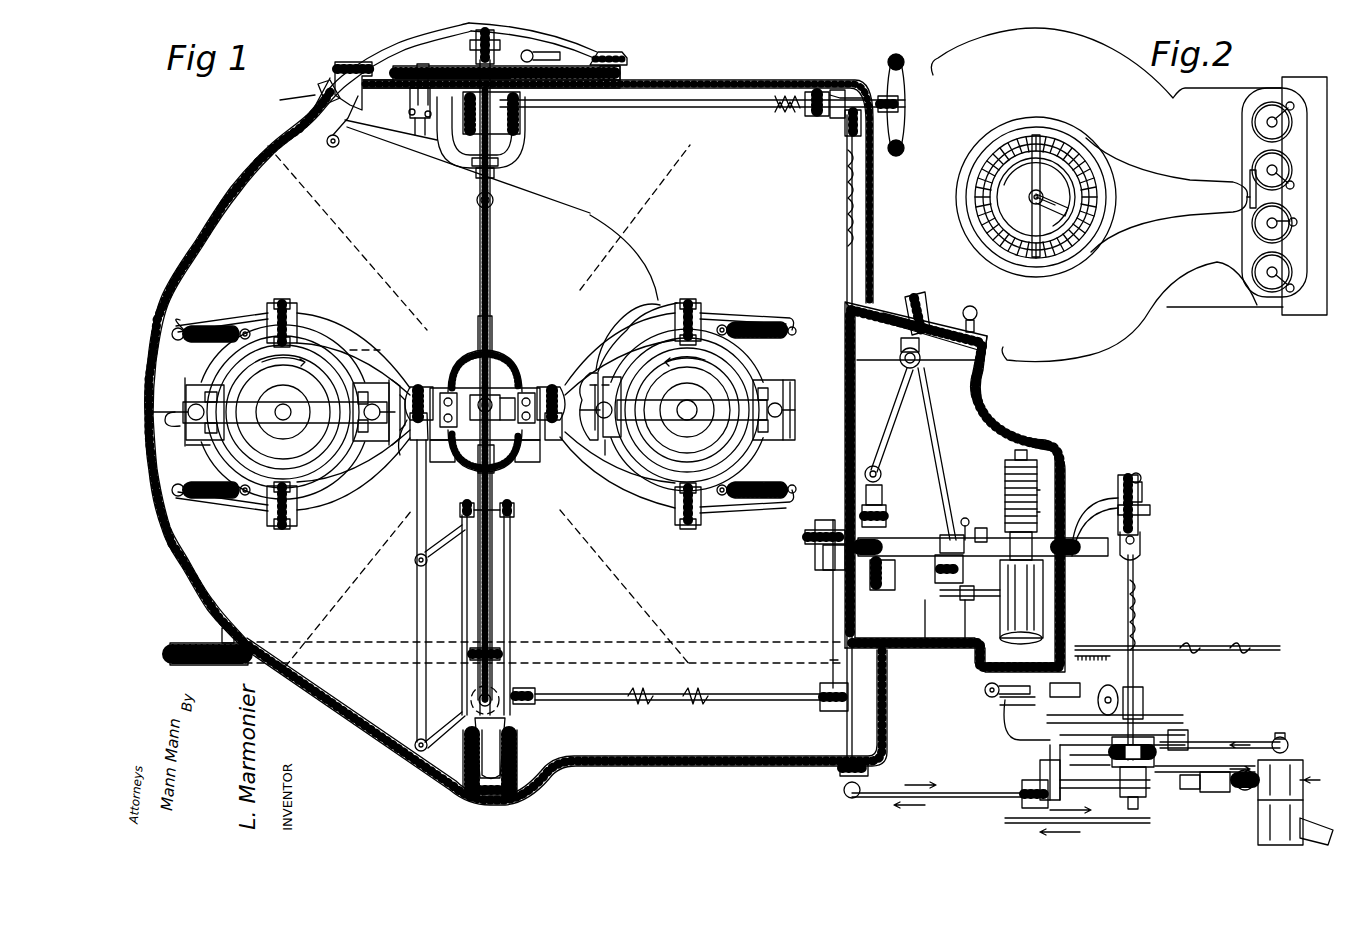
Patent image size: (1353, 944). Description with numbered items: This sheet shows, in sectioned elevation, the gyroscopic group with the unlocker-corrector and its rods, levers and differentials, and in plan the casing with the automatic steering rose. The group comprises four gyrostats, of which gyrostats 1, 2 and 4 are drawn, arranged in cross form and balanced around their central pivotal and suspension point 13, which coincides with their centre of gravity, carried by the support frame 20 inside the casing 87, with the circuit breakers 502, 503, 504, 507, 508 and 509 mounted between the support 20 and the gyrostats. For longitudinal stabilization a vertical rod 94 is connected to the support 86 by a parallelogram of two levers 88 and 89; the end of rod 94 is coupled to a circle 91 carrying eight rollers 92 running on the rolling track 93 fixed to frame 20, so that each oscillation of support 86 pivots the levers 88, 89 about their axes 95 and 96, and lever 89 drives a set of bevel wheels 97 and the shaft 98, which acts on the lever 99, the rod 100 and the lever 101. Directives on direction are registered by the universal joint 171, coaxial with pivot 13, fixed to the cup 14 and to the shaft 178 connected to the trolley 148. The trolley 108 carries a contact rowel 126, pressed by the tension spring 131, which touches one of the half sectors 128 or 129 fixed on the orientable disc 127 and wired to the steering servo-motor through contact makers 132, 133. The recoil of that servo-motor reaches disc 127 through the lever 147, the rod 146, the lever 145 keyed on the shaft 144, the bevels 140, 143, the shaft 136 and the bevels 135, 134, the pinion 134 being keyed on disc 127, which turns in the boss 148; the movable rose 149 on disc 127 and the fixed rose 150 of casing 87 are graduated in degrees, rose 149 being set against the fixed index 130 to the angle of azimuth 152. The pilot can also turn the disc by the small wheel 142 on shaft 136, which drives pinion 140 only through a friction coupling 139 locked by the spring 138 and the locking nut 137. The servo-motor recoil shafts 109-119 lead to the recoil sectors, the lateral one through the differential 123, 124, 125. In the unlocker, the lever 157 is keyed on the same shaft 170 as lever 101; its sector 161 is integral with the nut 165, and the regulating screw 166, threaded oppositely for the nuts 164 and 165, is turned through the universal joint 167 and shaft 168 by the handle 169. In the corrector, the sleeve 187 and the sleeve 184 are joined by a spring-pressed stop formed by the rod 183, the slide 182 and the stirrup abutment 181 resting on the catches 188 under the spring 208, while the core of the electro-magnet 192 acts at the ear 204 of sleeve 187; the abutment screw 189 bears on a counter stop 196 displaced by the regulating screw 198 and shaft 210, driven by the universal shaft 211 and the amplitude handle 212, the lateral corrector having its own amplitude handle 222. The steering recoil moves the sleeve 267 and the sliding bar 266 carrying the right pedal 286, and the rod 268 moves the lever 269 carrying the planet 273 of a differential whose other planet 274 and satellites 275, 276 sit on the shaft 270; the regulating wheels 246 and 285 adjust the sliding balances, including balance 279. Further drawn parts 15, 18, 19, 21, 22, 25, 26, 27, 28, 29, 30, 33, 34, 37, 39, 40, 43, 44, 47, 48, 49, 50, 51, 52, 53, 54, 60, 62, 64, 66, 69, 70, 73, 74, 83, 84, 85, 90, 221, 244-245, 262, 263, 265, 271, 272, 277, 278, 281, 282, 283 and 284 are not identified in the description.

In FIG. 1, the left dial 1 is at (300, 395).
In FIG. 1, the right dial 2 is at (710, 390).
In FIG. 1, the spindle 4 is at (477, 330).
In FIG. 1, the coupling 13 is at (502, 395).
In FIG. 1, the lower spindle 14 is at (496, 470).
In FIG. 1, the bevel gear 15 is at (452, 352).
In FIG. 1, the collar 18 is at (518, 398).
In FIG. 1, the hub housing 19 is at (440, 388).
In FIG. 1, the bearing block 20 is at (418, 387).
In FIG. 1, the housing curve 21 is at (366, 361).
In FIG. 1, the casing curve 22 is at (590, 385).
In FIG. 1, the clamp 25 is at (288, 300).
In FIG. 1, the clamp 26 is at (275, 526).
In FIG. 1, the clamp 27 is at (698, 306).
In FIG. 1, the clamp 28 is at (690, 522).
In FIG. 1, the shaft 29 is at (490, 305).
In FIG. 1, the sleeve 30 is at (460, 512).
In FIG. 1, the dial rim 33 is at (225, 370).
In FIG. 1, the dial rim 34 is at (672, 310).
In FIG. 1, the side plate 37 is at (186, 398).
In FIG. 1, the plate 39 is at (590, 440).
In FIG. 1, the flange 40 is at (795, 420).
In FIG. 1, the arm 43 is at (272, 412).
In FIG. 1, the arm 44 is at (687, 409).
In FIG. 1, the spring loop 47 is at (190, 326).
In FIG. 1, the rod 48 is at (236, 315).
In FIG. 1, the spring loop 49 is at (190, 498).
In FIG. 1, the rod 50 is at (235, 508).
In FIG. 1, the spring 51 is at (755, 320).
In FIG. 1, the rod 52 is at (782, 316).
In FIG. 1, the spring 53 is at (745, 500).
In FIG. 1, the rod 54 is at (775, 504).
In FIG. 1, the plate 60 is at (190, 443).
In FIG. 1, the side plate 62 is at (375, 386).
In FIG. 1, the link 64 is at (170, 423).
In FIG. 1, the flange 66 is at (395, 392).
In FIG. 1, the pin 69 is at (608, 460).
In FIG. 1, the side plate 70 is at (766, 386).
In FIG. 1, the plate 73 is at (600, 440).
In FIG. 1, the flange 74 is at (790, 395).
In FIG. 1, the central shaft 83 is at (478, 450).
In FIG. 1, the sleeve 84 is at (514, 510).
In FIG. 1, the nut 85 is at (500, 654).
In FIG. 1, the tube 86 is at (510, 565).
In FIG. 1, the housing 87 is at (165, 262).
In FIG. 1, the link 88 is at (443, 553).
In FIG. 1, the link 89 is at (440, 735).
In FIG. 1, the lever 90 is at (402, 455).
In FIG. 1, the bevel gear 91 is at (455, 462).
In FIG. 1, the bearing 92 is at (440, 455).
In FIG. 1, the ball bearing 93 is at (446, 392).
In FIG. 1, the bar 94 is at (414, 445).
In FIG. 1, the rod 95 is at (492, 538).
In FIG. 1, the pulley 96 is at (480, 697).
In FIG. 1, the fitting 97 is at (524, 688).
In FIG. 1, the spring rod 98 is at (640, 702).
In FIG. 1, the fitting 99 is at (830, 711).
In FIG. 1, the rod 100 is at (832, 600).
In FIG. 1, the fitting 101 is at (832, 570).
In FIG. 2, the needle 108 is at (1048, 262).
In FIG. 1, the rod 109-119 is at (1222, 646).
In FIG. 1, the valve 123 is at (1130, 475).
In FIG. 1, the nut 124 is at (1150, 510).
In FIG. 1, the valve stem 125 is at (1110, 500).
In FIG. 1, the bracket 126 is at (602, 52).
In FIG. 2, the bracket 126 is at (1068, 212).
In FIG. 1, the plate 127 is at (455, 68).
In FIG. 2, the plate 127 is at (1000, 274).
In FIG. 1, the block 128 is at (600, 70).
In FIG. 2, the block 128 is at (1018, 135).
In FIG. 1, the bolt 129 is at (414, 76).
In FIG. 2, the bolt 129 is at (990, 240).
In FIG. 1, the hinge 130 is at (372, 62).
In FIG. 2, the hinge 130 is at (972, 210).
In FIG. 1, the tube 131 is at (495, 55).
In FIG. 1, the handle 132 is at (410, 113).
In FIG. 1, the lever 133 is at (400, 120).
In FIG. 1, the bracket 134 is at (512, 135).
In FIG. 1, the gear 135 is at (522, 115).
In FIG. 1, the shaft 136 is at (672, 108).
In FIG. 1, the spring 137 is at (780, 112).
In FIG. 1, the nut 138 is at (812, 116).
In FIG. 1, the bushing 139 is at (828, 118).
In FIG. 1, the pipe 140 is at (850, 80).
In FIG. 1, the hand wheel 142 is at (906, 100).
In FIG. 2, the hand wheel 142 is at (1248, 208).
In FIG. 1, the fitting 143 is at (848, 136).
In FIG. 1, the shaft 144 is at (845, 212).
In FIG. 1, the nut 145 is at (868, 770).
In FIG. 1, the pipe 146 is at (905, 800).
In FIG. 1, the fitting 147 is at (1000, 800).
In FIG. 1, the bolt 148 is at (530, 56).
In FIG. 2, the scale 149 is at (1062, 140).
In FIG. 2, the pointer 150 is at (1080, 150).
In FIG. 2, the pointer 152 is at (1090, 218).
In FIG. 1, the block 157 is at (940, 583).
In FIG. 1, the rod 161 is at (940, 594).
In FIG. 1, the block 164 is at (886, 516).
In FIG. 1, the block 165 is at (878, 590).
In FIG. 1, the block 166 is at (882, 495).
In FIG. 1, the pivot 167 is at (881, 473).
In FIG. 1, the lever 168 is at (888, 435).
In FIG. 1, the lever 169 is at (978, 318).
In FIG. 2, the lever 169 is at (1294, 290).
In FIG. 1, the pivot 170 is at (916, 348).
In FIG. 1, the joint 171 is at (492, 398).
In FIG. 1, the collar 178 is at (470, 165).
In FIG. 1, the spring 181 is at (1038, 511).
In FIG. 1, the spring 182 is at (1040, 491).
In FIG. 1, the spring stack 183 is at (1005, 465).
In FIG. 1, the pipe 184 is at (1020, 540).
In FIG. 1, the stem 187 is at (980, 528).
In FIG. 1, the cylinder 188 is at (1010, 535).
In FIG. 1, the pin 189 is at (965, 518).
In FIG. 1, the fitting 192 is at (950, 553).
In FIG. 1, the rod 196 is at (925, 640).
In FIG. 1, the rod 198 is at (965, 640).
In FIG. 1, the pipe 204 is at (1092, 522).
In FIG. 1, the cap 208 is at (1030, 462).
In FIG. 1, the lever 210 is at (934, 440).
In FIG. 1, the pin 211 is at (920, 368).
In FIG. 2, the knob 212 is at (1297, 225).
In FIG. 2, the knob 221 is at (1294, 185).
In FIG. 2, the knob 222 is at (1294, 106).
In FIG. 1, the pipe 244-245 is at (1077, 828).
In FIG. 1, the spring 246 is at (1140, 618).
In FIG. 1, the pipe 262 is at (1205, 766).
In FIG. 1, the fitting 263 is at (1215, 794).
In FIG. 1, the pipe 265 is at (1010, 725).
In FIG. 1, the knob 266 is at (1246, 792).
In FIG. 1, the valve 267 is at (1298, 765).
In FIG. 1, the pin 268 is at (1281, 736).
In FIG. 1, the pipe 269 is at (1078, 765).
In FIG. 1, the rod 270 is at (1135, 578).
In FIG. 1, the rack 271 is at (1112, 660).
In FIG. 1, the pulley 272 is at (1105, 691).
In FIG. 1, the valve 273 is at (1145, 737).
In FIG. 1, the fitting 274 is at (1148, 790).
In FIG. 1, the pipe 275 is at (1240, 742).
In FIG. 1, the pipe 276 is at (1075, 790).
In FIG. 1, the bar 277 is at (1188, 740).
In FIG. 1, the bar 278 is at (1183, 719).
In FIG. 1, the pipe 279 is at (1048, 760).
In FIG. 1, the rod 281 is at (1000, 701).
In FIG. 1, the pivot 282 is at (985, 688).
In FIG. 1, the block 283 is at (1040, 740).
In FIG. 1, the block 284 is at (1085, 690).
In FIG. 1, the block 285 is at (1143, 700).
In FIG. 1, the fork 286 is at (1142, 540).
In FIG. 1, the spring 502 is at (335, 322).
In FIG. 1, the curve 503 is at (368, 348).
In FIG. 1, the curve 504 is at (375, 485).
In FIG. 1, the curve 507 is at (590, 345).
In FIG. 1, the rod 508 is at (608, 325).
In FIG. 1, the curve 509 is at (632, 330).